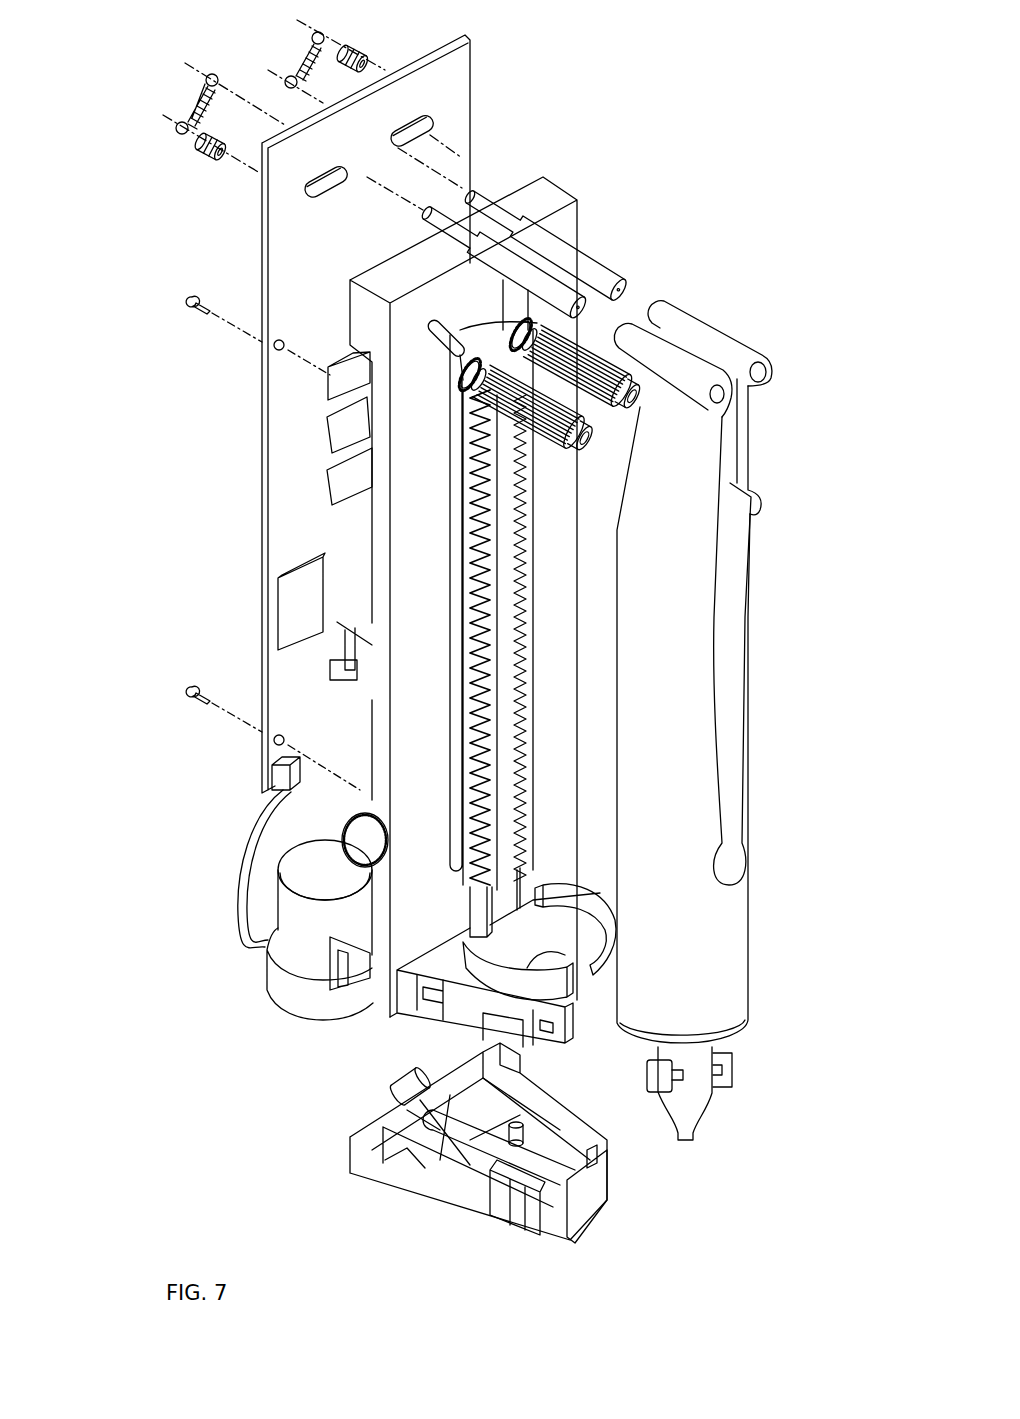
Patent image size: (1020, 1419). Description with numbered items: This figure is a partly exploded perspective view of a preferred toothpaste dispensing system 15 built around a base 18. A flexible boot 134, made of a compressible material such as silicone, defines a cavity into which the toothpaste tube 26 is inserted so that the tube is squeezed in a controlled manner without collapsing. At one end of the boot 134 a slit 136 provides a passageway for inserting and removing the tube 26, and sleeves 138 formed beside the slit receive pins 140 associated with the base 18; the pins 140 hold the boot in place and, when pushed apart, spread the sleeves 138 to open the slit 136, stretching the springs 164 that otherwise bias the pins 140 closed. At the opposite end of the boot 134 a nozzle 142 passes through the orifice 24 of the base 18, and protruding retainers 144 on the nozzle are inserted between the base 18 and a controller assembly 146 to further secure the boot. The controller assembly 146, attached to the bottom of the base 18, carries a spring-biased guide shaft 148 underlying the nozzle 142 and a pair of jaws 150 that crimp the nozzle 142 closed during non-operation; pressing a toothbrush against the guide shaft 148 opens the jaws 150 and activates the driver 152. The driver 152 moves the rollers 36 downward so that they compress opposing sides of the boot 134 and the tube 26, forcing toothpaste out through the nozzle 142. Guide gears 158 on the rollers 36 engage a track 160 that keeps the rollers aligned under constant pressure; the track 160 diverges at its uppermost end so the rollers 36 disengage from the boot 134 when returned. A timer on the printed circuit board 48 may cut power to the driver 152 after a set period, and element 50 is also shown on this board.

The toothpaste dispensing system 15 is at (622, 108).
The base 18 is at (383, 332).
The orifice 24 is at (577, 987).
The toothpaste tube 26 is at (748, 535).
The rollers 36 is at (613, 313).
The printed circuit board 48 is at (262, 493).
The plate 50 is at (355, 429).
The flexible boot 134 is at (725, 960).
The slit 136 is at (750, 450).
The sleeves 138 is at (772, 362).
The pins 140 is at (585, 262).
The nozzle 142 is at (695, 1120).
The protruding retainers 144 is at (730, 1070).
The controller assembly 146 is at (485, 1220).
The guide shaft 148 is at (383, 1095).
The jaws 150 is at (520, 1163).
The driver 152 is at (285, 983).
The guide gears 158 is at (520, 333).
The track 160 is at (468, 530).
The springs 164 is at (300, 55).